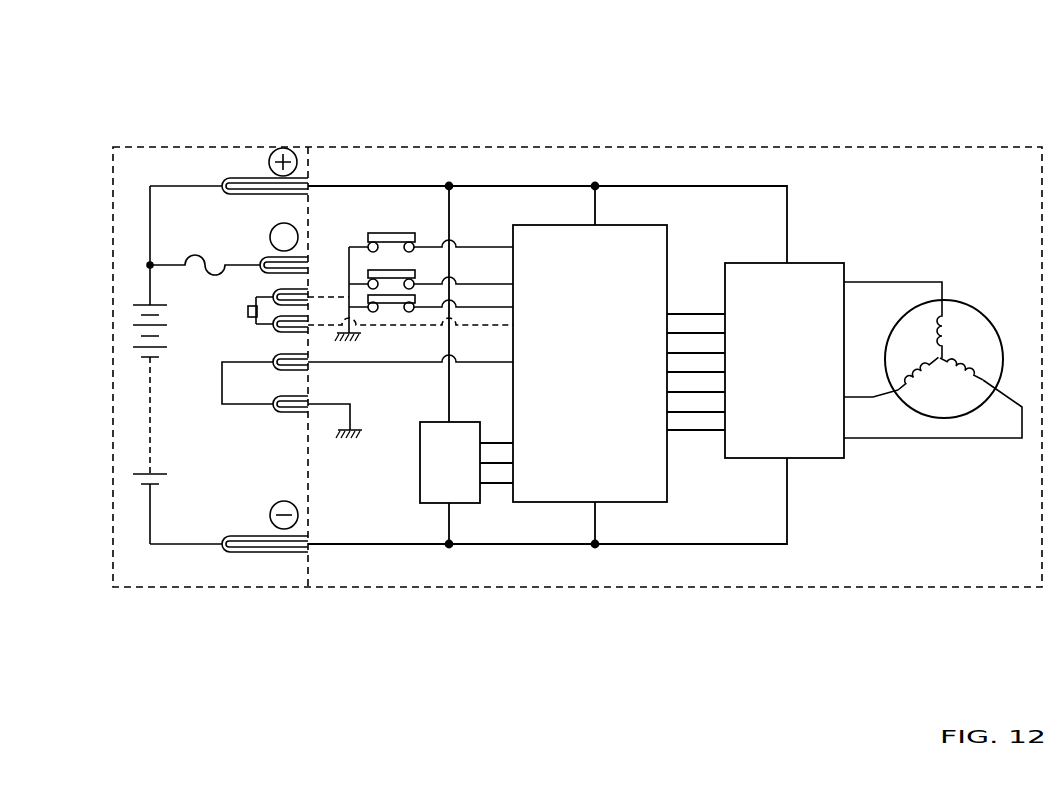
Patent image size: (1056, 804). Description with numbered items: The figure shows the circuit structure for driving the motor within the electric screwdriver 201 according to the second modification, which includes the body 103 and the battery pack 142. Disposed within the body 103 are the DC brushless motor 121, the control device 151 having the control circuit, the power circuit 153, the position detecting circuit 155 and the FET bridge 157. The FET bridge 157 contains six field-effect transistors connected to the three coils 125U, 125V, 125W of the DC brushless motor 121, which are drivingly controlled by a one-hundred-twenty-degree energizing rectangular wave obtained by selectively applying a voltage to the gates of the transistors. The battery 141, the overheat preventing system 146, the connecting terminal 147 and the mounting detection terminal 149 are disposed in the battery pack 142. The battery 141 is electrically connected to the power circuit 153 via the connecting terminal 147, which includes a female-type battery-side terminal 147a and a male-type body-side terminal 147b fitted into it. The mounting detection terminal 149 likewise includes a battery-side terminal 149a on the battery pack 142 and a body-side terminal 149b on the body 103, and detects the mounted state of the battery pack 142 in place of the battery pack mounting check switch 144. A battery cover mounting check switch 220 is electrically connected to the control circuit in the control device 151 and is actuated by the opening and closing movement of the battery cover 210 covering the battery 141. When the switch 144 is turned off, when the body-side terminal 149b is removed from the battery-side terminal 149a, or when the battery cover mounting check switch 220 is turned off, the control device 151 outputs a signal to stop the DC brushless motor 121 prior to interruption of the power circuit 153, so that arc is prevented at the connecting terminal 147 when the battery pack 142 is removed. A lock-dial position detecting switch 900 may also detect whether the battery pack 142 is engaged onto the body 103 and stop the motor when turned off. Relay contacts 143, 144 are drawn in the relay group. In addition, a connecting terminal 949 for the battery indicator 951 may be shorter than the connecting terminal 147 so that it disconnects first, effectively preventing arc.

The battery pack 142 is at (175, 146).
The body 103 is at (765, 146).
The electric screwdriver 201 is at (706, 72).
The battery 141 is at (128, 337).
The overheat preventing system 146 is at (212, 239).
The connecting terminal 147 is at (267, 373).
The battery-side terminal 147a is at (226, 179).
The body-side terminal 147b is at (258, 183).
The connecting terminal for the battery indicator 949 is at (246, 294).
The battery indicator 951 is at (242, 311).
The mounting detection terminal 149 is at (279, 397).
The battery-side terminal 149a is at (278, 403).
The body-side terminal 149b is at (295, 404).
The battery cover 210 is at (547, 295).
The battery cover mounting check switch 220 is at (433, 207).
The power circuit 153 is at (477, 173).
The lock-dial position detecting switch 900 is at (410, 264).
The relay 143 is at (372, 365).
The battery pack mounting check switch 144 is at (397, 313).
The control device 151 is at (590, 363).
The position detecting circuit 155 is at (466, 462).
The FET bridge 157 is at (755, 360).
The DC brushless motor 121 is at (933, 327).
The coil 125U is at (945, 318).
The coil 125V is at (908, 401).
The coil 125W is at (985, 390).